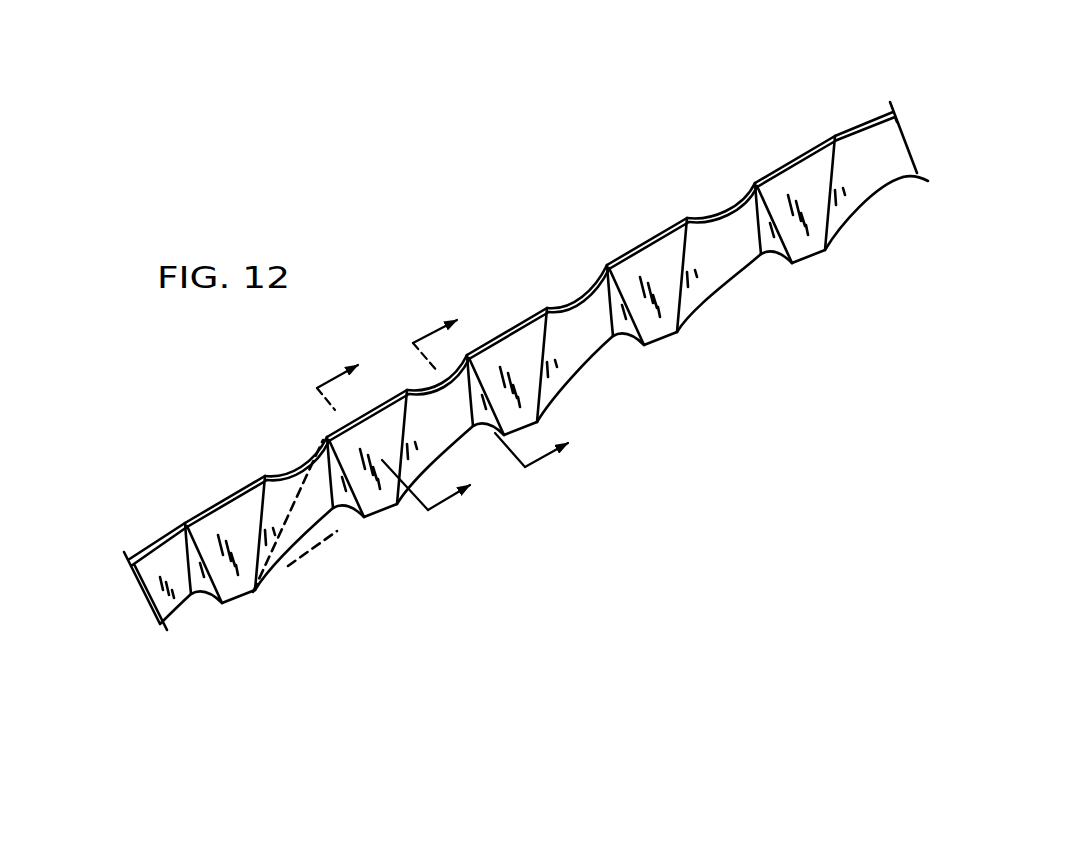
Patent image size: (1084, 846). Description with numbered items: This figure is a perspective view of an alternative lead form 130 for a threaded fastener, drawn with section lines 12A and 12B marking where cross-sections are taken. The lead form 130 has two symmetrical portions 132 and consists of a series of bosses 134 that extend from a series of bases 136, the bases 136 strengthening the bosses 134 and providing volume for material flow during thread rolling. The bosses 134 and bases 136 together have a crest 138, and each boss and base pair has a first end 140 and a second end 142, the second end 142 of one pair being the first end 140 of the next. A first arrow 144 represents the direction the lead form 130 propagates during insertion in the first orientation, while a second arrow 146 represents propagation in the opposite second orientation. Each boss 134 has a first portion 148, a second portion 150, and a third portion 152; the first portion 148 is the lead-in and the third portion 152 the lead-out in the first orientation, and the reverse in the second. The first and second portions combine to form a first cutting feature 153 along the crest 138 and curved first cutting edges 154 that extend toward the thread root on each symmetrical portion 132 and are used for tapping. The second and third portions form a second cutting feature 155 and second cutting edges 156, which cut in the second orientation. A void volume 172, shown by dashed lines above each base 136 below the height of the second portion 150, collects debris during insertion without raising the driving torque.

The lead form 130 is at (578, 73).
The symmetrical portion 132 is at (220, 527).
The boss 134 is at (609, 262).
The base 136 is at (315, 510).
The crest 138 is at (508, 328).
The first end 140 is at (760, 225).
The second end 142 is at (642, 348).
The first arrow 144 is at (963, 112).
The second arrow 146 is at (82, 628).
The first portion 148 is at (285, 545).
The second portion 150 is at (236, 583).
The third portion 152 is at (200, 583).
The first cutting feature 153 is at (552, 313).
The first cutting edge 154 is at (560, 388).
The second cutting feature 155 is at (464, 347).
The second cutting edge 156 is at (632, 307).
The void volume 172 is at (295, 457).
The section line 12A is at (478, 400).
The section line 12B is at (376, 445).